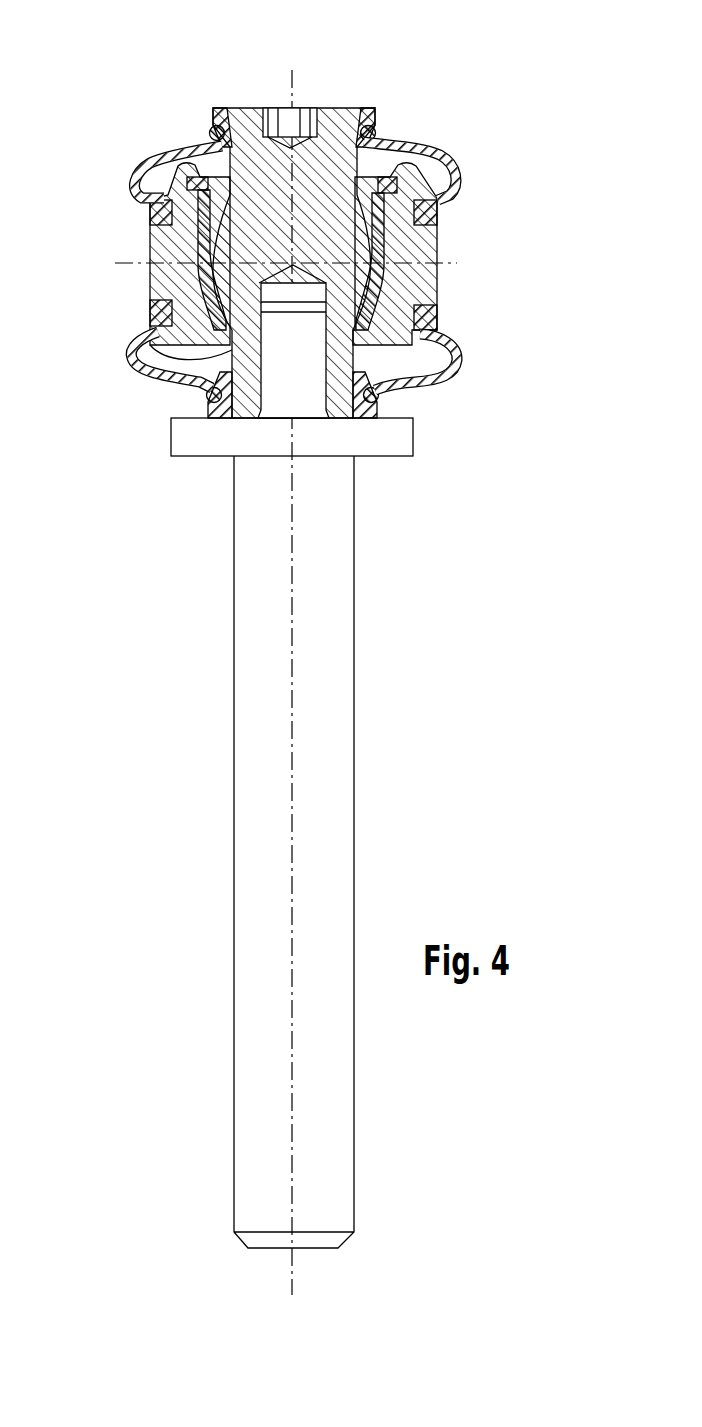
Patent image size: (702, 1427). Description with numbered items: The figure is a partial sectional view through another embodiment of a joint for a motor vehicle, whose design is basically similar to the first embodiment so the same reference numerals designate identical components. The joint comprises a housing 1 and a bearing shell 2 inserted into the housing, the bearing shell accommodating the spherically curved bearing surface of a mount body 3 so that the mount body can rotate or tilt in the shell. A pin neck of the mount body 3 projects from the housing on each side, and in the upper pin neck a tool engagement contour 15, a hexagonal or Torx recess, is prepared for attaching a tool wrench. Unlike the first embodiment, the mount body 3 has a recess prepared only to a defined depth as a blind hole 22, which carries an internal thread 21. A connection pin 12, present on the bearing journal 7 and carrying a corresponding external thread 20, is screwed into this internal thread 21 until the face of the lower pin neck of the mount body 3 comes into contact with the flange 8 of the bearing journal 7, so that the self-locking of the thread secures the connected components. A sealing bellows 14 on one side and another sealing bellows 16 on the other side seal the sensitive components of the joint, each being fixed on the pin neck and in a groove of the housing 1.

The housing 1 is at (413, 243).
The bearing shell 2 is at (205, 250).
The mount body 3 is at (365, 178).
The bearing journal 7 is at (332, 826).
The flange 8 is at (383, 443).
The connection pin 12 is at (318, 358).
The sealing bellows 14 is at (462, 345).
The tool engagement contour 15 is at (303, 96).
The sealing bellows 16 is at (410, 155).
The external thread 20 is at (252, 348).
The internal thread 21 is at (171, 360).
The blind hole 22 is at (372, 272).